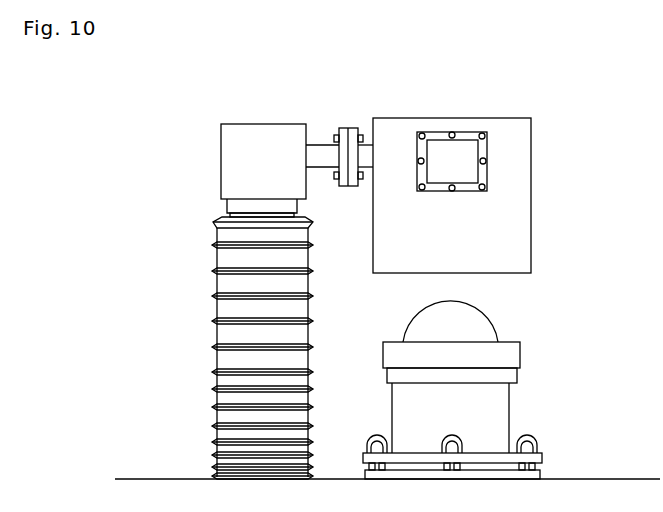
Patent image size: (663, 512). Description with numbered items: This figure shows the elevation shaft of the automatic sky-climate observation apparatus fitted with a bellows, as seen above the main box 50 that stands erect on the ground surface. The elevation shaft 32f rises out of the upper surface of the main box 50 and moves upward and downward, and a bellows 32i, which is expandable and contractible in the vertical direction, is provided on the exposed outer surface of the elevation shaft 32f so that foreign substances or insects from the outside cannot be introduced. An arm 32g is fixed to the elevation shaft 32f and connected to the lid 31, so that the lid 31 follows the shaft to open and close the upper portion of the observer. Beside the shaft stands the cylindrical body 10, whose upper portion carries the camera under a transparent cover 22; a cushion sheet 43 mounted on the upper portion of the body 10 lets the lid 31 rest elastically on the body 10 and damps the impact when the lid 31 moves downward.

The cylindrical body 10 is at (490, 409).
The transparent cover 22 is at (475, 323).
The lid 31 is at (515, 205).
The elevation shaft 32f is at (220, 198).
The arm 32g is at (318, 150).
The bellows 32i is at (230, 310).
The cushion sheet 43 is at (508, 352).
The main box 50 is at (153, 478).